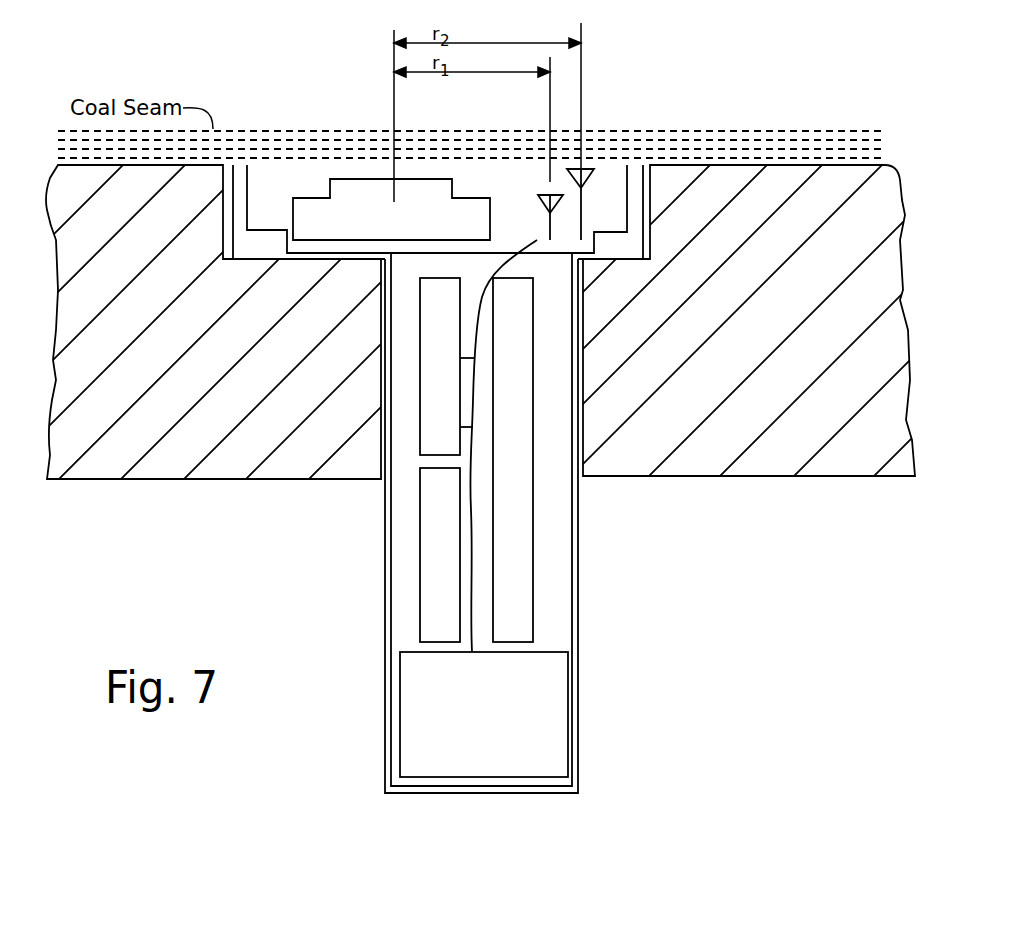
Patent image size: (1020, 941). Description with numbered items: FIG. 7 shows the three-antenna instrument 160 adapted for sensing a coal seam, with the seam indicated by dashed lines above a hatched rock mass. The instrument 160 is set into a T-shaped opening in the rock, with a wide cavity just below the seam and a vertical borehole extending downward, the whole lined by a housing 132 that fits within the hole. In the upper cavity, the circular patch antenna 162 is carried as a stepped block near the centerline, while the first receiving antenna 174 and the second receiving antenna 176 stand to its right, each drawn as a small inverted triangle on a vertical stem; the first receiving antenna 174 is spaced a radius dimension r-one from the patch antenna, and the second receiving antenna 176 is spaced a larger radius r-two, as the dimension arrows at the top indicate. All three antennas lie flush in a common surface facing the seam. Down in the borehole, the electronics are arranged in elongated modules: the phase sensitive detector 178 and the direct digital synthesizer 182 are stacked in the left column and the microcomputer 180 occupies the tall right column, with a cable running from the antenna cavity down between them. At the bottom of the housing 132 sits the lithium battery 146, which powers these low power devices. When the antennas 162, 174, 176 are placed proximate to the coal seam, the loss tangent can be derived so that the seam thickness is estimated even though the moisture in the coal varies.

The housing 132 is at (578, 608).
The lithium battery 146 is at (476, 708).
The instrument 160 is at (313, 163).
The circular patch antenna 162 is at (428, 178).
The first receiving antenna 174 is at (538, 195).
The second receiving antenna 176 is at (592, 182).
The phase sensitive detector 178 is at (430, 433).
The microcomputer 180 is at (520, 521).
The direct digital synthesizer 182 is at (423, 582).